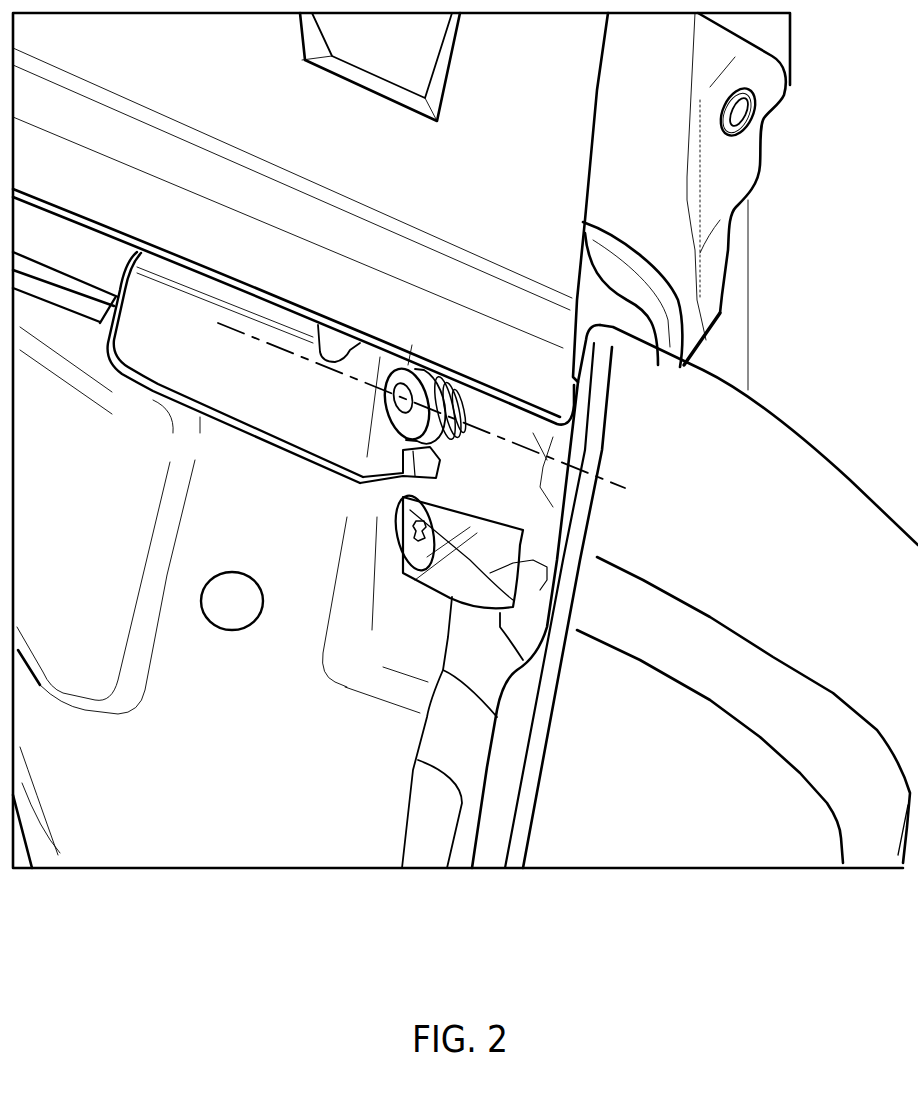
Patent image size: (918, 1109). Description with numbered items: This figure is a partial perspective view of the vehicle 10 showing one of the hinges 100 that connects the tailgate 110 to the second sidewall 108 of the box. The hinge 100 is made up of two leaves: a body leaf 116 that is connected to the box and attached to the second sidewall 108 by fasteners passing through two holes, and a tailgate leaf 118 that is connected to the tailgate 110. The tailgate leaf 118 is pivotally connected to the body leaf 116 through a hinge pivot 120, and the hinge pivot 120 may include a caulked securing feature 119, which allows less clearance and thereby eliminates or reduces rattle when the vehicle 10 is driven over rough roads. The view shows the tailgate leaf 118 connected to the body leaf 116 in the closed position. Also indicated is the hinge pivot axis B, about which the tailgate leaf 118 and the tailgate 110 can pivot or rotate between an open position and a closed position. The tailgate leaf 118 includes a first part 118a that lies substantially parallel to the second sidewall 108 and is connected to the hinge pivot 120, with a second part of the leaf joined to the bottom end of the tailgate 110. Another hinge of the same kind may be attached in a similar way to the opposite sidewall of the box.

The vehicle 10 is at (790, 123).
The hinge 100 is at (229, 441).
The second sidewall 108 is at (677, 253).
The tailgate 110 is at (596, 163).
The body leaf 116 is at (496, 470).
The tailgate leaf 118 is at (155, 383).
The first part 118a is at (393, 455).
The caulked securing feature 119 is at (430, 370).
The hinge pivot 120 is at (388, 403).
The hinge pivot axis B is at (610, 482).